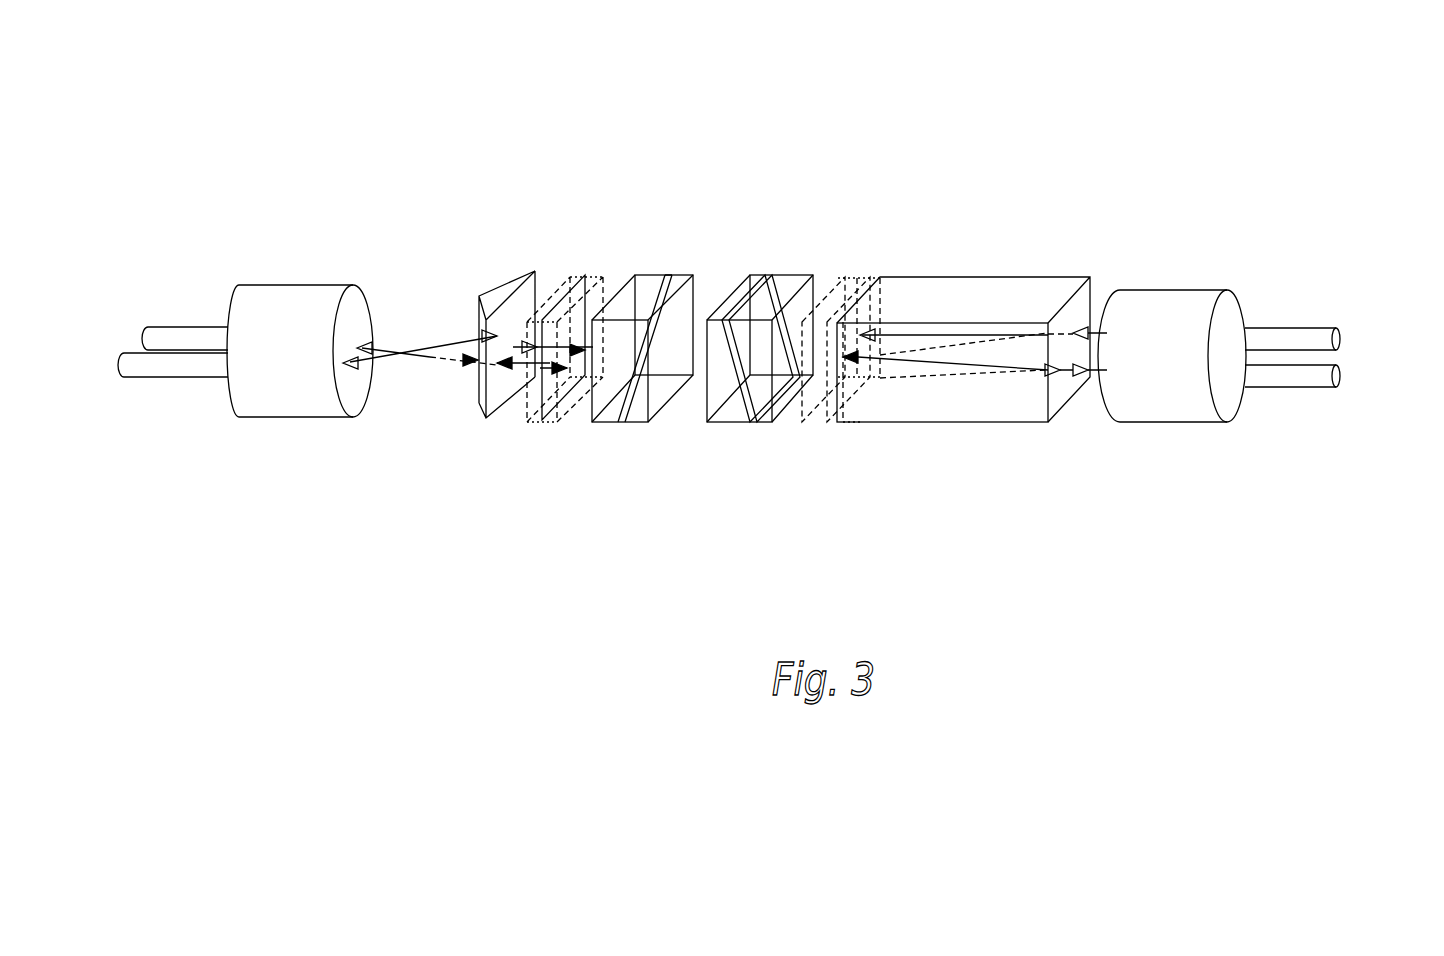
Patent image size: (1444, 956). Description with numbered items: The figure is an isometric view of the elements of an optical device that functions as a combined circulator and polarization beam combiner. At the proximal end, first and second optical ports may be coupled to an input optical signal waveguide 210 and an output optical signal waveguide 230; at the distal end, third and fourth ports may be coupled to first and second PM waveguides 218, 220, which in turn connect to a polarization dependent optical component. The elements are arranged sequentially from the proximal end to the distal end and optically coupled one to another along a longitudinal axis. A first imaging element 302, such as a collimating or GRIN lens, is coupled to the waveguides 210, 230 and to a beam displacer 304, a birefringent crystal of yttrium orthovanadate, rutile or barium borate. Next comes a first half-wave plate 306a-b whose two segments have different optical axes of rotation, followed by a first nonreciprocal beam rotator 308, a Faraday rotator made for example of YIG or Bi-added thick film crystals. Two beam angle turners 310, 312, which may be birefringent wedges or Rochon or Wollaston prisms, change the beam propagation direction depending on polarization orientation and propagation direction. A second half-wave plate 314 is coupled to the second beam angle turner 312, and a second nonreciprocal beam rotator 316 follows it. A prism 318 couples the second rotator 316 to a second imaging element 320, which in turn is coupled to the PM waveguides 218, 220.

The input optical signal waveguide 210 is at (1308, 326).
The first PM waveguide 218 is at (168, 327).
The second PM waveguide 220 is at (168, 377).
The output optical signal waveguide 230 is at (1317, 387).
The first imaging element 302 is at (1140, 423).
The beam displacer 304 is at (973, 277).
The first half-wave plate 306a-b is at (870, 277).
The first nonreciprocal beam rotator 308 is at (843, 277).
The first beam angle turner 310 is at (707, 427).
The second beam angle turner 312 is at (590, 427).
The second half-wave plate 314 is at (603, 277).
The second nonreciprocal beam rotator 316 is at (570, 277).
The prism 318 is at (479, 296).
The second imaging element 320 is at (352, 430).